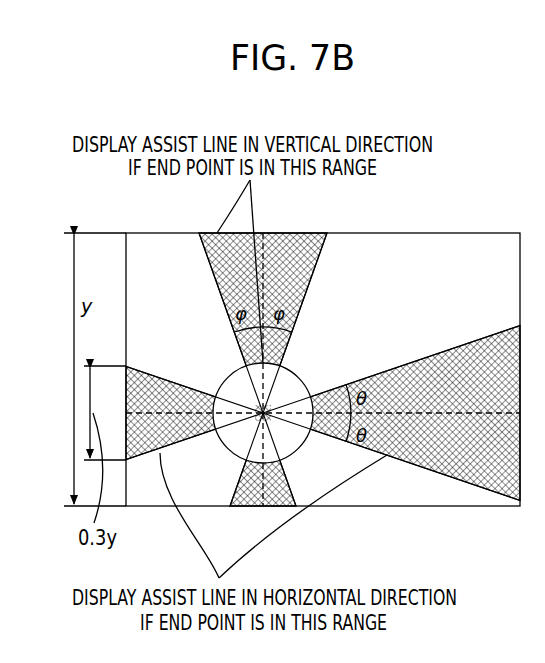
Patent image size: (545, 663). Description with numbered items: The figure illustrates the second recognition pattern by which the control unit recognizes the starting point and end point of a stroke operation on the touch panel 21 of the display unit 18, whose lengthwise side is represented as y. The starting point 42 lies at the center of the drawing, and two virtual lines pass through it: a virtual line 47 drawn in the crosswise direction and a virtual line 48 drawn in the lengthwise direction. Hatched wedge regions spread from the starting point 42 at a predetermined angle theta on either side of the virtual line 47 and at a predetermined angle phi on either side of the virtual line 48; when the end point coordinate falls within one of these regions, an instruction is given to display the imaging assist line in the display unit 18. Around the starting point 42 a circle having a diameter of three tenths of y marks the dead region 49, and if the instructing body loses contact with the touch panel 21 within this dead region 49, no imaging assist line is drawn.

The display unit 18 is at (323, 348).
The touch panel 21 is at (458, 211).
The starting point 42 is at (299, 378).
The virtual line 47 is at (447, 351).
The virtual line 48 is at (311, 277).
The dead region 49 is at (236, 383).